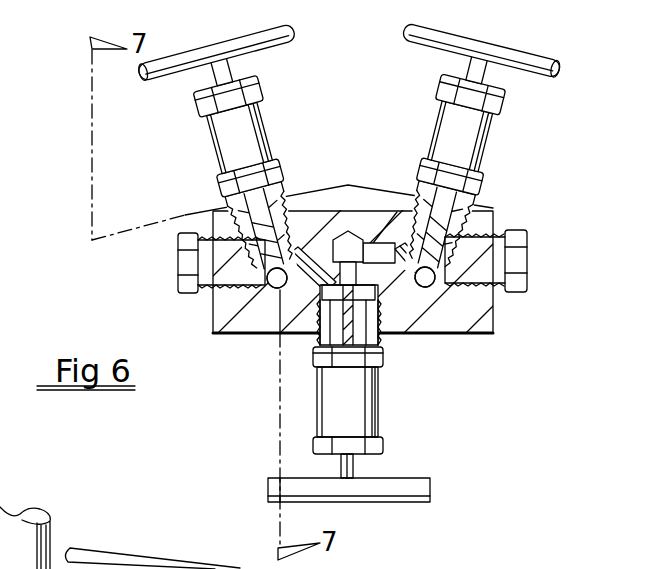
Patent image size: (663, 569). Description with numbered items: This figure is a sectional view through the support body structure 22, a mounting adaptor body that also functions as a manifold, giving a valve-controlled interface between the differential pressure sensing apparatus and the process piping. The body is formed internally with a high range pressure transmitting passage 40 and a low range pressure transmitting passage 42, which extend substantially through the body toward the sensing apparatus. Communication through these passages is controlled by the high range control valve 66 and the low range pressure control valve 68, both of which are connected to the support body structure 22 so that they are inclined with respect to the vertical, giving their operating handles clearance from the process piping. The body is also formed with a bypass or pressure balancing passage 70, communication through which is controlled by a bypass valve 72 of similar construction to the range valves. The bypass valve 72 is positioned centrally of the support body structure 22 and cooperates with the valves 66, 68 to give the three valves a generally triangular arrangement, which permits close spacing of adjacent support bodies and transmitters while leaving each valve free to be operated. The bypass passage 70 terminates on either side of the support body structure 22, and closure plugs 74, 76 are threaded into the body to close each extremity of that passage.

The support body structure 22 is at (359, 194).
The high range pressure transmitting passage 40 is at (270, 290).
The low range pressure transmitting passage 42 is at (427, 290).
The high range control valve 66 is at (222, 152).
The low range pressure control valve 68 is at (493, 144).
The bypass or pressure balancing passage 70 is at (312, 266).
The bypass valve 72 is at (379, 406).
The closure plug 74 is at (180, 260).
The closure plug 76 is at (519, 252).